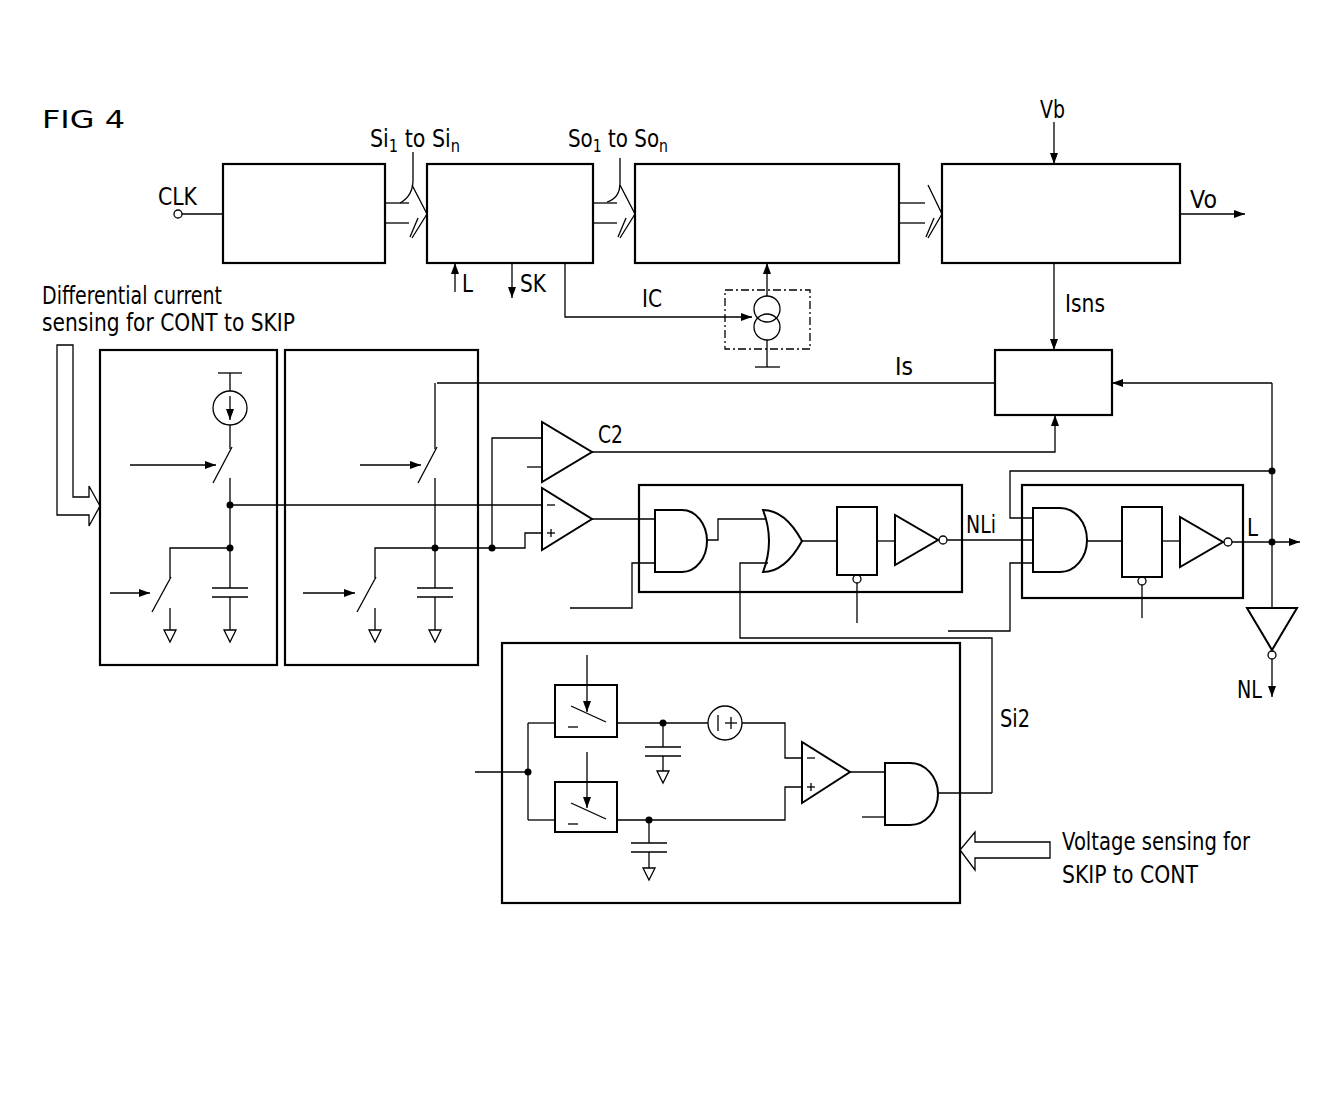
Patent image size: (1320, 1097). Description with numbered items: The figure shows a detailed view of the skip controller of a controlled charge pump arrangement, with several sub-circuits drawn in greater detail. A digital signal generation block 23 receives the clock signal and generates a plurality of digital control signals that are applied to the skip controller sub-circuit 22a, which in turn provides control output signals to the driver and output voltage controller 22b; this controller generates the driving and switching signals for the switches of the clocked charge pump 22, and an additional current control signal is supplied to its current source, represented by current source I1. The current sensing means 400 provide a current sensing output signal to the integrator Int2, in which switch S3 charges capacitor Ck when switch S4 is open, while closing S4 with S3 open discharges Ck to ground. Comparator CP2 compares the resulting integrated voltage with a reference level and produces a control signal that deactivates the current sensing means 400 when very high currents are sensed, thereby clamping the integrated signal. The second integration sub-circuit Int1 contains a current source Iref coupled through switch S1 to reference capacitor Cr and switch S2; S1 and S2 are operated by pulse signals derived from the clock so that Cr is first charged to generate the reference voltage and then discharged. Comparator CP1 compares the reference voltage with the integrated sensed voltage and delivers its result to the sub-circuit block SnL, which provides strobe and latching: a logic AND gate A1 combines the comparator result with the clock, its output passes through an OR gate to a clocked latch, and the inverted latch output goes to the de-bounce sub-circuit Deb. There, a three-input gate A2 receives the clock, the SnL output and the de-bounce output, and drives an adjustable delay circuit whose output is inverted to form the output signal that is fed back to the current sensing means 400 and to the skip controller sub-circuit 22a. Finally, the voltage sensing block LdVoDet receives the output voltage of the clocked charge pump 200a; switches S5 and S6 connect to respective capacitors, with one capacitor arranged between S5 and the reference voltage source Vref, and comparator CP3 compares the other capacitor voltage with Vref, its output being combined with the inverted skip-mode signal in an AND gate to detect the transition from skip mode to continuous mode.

The digital signal generation block 23 is at (303, 164).
The skip controller sub-circuit block 22a is at (505, 164).
The driver and output voltage controller 22b is at (762, 164).
The clocked charge pump 200a is at (1130, 164).
The current sensing means 400 is at (1112, 362).
The current source I1 is at (810, 318).
The clocked charge pump 22 is at (321, 587).
The second integration sub-circuit Int1 is at (188, 537).
The integrator block Int2 is at (381, 537).
The current source Iref is at (212, 408).
The switch S1 is at (233, 462).
The switch S2 is at (173, 595).
The switch S3 is at (438, 462).
The switch S4 is at (378, 595).
The switch S5 is at (617, 705).
The switch S6 is at (587, 832).
The reference capacitor Cr is at (240, 602).
The capacitor Ck is at (445, 602).
The comparator CP1 is at (568, 528).
The comparator CP2 is at (570, 455).
The comparator CP3 is at (830, 766).
The sub-circuit block SnL is at (781, 601).
The logic AND gate A1 is at (681, 541).
The second logic gate A2 is at (1060, 540).
The de-bounce sub-circuit Deb is at (1110, 564).
The sub-circuit block LdVoDet is at (688, 773).
The reference voltage source Vref is at (726, 709).